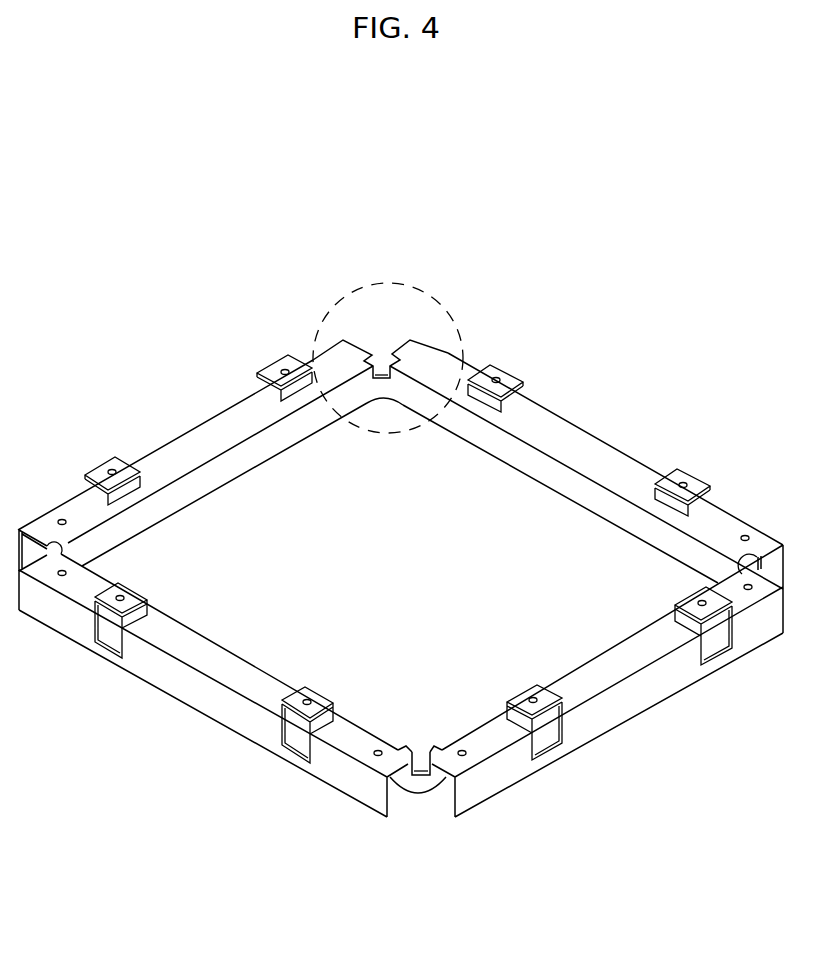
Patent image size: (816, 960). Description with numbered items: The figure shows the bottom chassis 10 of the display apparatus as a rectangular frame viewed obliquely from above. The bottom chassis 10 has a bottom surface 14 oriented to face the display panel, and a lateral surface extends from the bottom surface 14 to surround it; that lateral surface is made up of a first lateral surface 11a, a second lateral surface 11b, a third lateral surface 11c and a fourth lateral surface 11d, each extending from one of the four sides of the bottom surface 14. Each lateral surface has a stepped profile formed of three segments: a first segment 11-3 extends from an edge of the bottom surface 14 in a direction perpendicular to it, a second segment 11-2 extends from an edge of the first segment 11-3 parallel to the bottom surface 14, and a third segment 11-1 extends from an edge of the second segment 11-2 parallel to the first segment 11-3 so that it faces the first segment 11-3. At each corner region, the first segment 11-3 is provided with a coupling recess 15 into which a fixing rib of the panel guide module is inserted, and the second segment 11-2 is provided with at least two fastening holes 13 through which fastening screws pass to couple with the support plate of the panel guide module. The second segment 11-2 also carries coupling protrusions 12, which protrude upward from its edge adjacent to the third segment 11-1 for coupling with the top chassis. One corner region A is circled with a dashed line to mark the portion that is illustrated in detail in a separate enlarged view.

The bottom chassis 10 is at (244, 309).
The first lateral surface 11a is at (447, 351).
The second lateral surface 11b is at (185, 432).
The third lateral surface 11c is at (202, 684).
The fourth lateral surface 11d is at (622, 692).
The third segment 11-1 is at (134, 674).
The second segment 11-2 is at (577, 463).
The first segment 11-3 is at (458, 431).
The coupling protrusion 12 is at (505, 378).
The fastening hole 13 is at (344, 356).
The bottom surface 14 is at (597, 532).
The coupling recess 15 is at (416, 816).
The corner region A is at (337, 299).